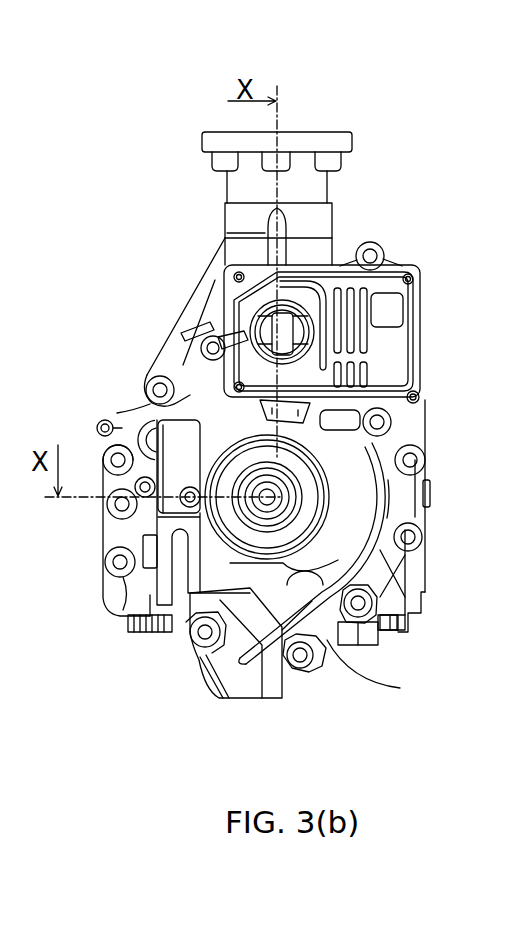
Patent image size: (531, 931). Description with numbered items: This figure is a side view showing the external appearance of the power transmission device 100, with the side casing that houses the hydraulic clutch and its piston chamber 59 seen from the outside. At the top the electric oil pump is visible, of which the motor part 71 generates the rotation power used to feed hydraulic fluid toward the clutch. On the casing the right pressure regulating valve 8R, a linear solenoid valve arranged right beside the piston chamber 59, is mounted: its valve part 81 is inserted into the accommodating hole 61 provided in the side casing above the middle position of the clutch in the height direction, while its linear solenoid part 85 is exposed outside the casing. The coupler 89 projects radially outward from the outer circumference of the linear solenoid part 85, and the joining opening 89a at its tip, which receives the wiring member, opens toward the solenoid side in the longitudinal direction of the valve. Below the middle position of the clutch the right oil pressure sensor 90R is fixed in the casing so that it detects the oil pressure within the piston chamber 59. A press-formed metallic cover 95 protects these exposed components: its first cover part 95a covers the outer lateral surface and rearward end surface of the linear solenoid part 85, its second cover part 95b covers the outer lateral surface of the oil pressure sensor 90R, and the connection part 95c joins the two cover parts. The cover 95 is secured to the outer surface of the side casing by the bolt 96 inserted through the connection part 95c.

The power unit 100 is at (420, 131).
The motor part 71 is at (421, 322).
The accommodating hole 61 is at (120, 407).
The valve part 81 is at (113, 416).
The right pressure regulating valve 8R is at (104, 523).
The coupler 89 is at (107, 551).
The joining opening 89a is at (155, 593).
The linear solenoid part 85 is at (143, 633).
The cover 95 is at (257, 650).
The first cover part 95a is at (162, 637).
The second cover part 95b is at (330, 650).
The connection part 95c is at (210, 670).
The right oil pressure sensor 90R is at (300, 697).
The bolt 96 is at (409, 617).
The piston chamber 59 is at (413, 597).